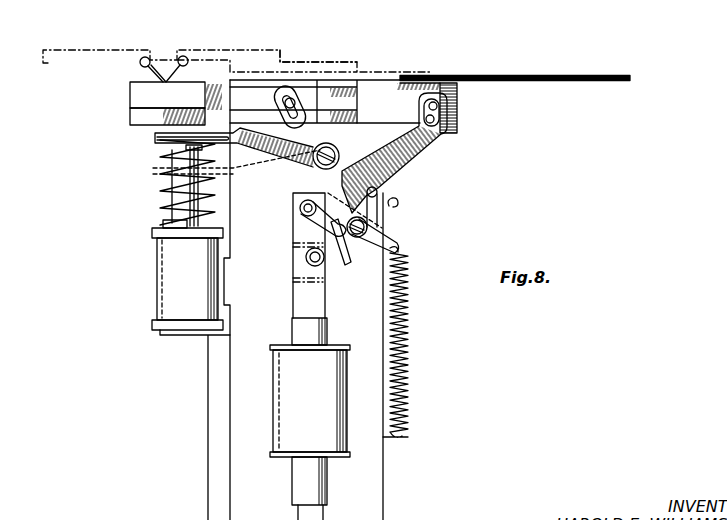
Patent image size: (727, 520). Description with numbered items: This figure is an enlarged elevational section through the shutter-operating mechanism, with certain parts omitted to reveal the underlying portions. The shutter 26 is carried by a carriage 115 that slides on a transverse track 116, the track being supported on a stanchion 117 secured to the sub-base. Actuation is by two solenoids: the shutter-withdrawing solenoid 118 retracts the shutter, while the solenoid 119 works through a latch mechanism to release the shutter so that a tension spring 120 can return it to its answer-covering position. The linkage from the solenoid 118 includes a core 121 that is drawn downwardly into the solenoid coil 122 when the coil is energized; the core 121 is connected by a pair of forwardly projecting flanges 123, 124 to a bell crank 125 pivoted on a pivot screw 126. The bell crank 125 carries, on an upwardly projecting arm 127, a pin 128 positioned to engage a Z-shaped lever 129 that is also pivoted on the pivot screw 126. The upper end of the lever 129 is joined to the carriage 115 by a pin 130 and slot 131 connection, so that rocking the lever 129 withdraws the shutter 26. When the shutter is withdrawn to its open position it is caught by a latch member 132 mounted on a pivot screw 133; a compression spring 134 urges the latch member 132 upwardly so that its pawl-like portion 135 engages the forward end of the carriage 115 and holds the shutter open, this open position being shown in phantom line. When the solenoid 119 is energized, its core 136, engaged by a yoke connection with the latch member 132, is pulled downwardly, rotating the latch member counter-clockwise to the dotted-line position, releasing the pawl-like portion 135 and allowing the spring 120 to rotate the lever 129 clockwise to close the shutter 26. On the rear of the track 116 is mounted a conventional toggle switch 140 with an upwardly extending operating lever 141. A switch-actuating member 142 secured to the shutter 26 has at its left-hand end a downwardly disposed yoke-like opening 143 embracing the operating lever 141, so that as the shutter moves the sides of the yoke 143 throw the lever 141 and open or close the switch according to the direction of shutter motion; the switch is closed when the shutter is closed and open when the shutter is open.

The shutter 26 is at (514, 74).
The carriage 115 is at (450, 133).
The transverse track 116 is at (138, 118).
The stanchion 117 is at (365, 480).
The shutter-withdrawing solenoid 118 is at (275, 425).
The solenoid 119 is at (167, 268).
The tension spring 120 is at (407, 345).
The core 121 is at (300, 295).
The solenoid coil 122 is at (287, 385).
The forwardly projecting flange 123 is at (293, 197).
The forwardly projecting flange 124 is at (293, 230).
The bell crank 125 is at (340, 256).
The pivot screw 126 is at (373, 230).
The upwardly projecting arm 127 is at (390, 201).
The pin 128 is at (374, 187).
The Z-shaped lever 129 is at (423, 142).
The pin 130 is at (437, 106).
The slot 131 is at (452, 118).
The latch member 132 is at (262, 160).
The pivot screw 133 is at (334, 162).
The compression spring 134 is at (173, 202).
The pawl-like portion 135 is at (313, 142).
The core 136 is at (180, 193).
The toggle switch 140 is at (137, 98).
The operating lever 141 is at (184, 58).
The switch-actuating member 142 is at (278, 50).
The yoke-like opening 143 is at (93, 52).